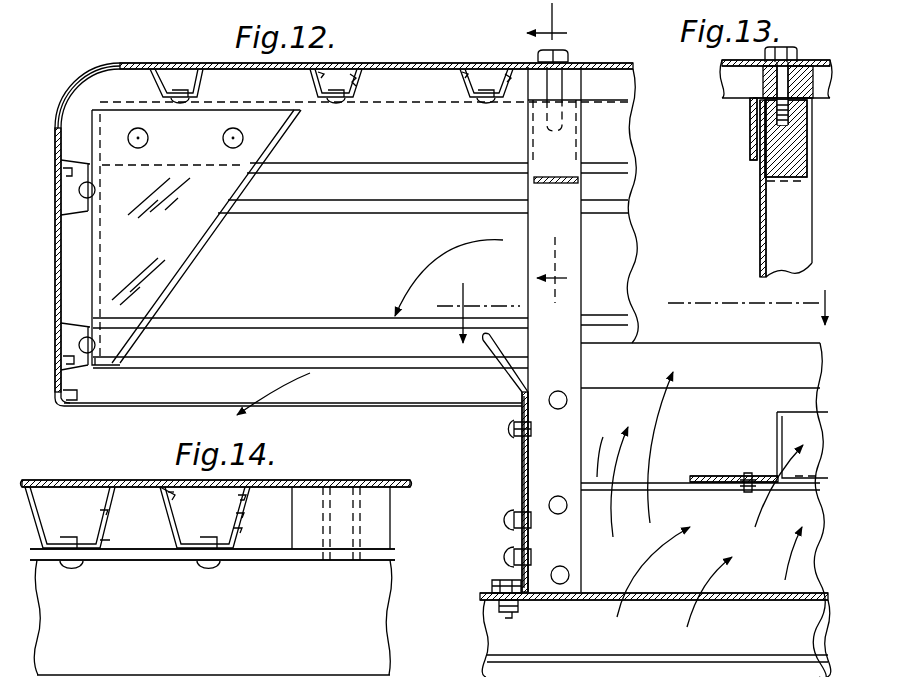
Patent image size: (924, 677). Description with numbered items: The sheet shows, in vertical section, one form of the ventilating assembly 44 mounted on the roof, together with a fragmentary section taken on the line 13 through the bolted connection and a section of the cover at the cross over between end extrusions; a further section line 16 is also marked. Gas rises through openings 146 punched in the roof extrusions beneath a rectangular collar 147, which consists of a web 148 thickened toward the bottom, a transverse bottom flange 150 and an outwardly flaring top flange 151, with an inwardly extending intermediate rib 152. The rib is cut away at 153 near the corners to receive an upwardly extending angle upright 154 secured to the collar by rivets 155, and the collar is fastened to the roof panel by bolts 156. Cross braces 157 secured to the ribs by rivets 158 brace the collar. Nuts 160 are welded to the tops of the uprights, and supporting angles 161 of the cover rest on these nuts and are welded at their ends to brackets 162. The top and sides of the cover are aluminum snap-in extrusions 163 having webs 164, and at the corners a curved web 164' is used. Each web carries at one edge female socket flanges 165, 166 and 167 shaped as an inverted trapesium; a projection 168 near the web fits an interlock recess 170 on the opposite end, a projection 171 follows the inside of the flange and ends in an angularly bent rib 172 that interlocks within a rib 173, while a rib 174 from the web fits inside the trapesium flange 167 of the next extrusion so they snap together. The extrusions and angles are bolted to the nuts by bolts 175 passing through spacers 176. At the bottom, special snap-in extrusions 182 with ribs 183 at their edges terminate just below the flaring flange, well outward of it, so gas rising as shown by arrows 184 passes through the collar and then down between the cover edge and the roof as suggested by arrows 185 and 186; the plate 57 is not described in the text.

In FIG. 12, the section line 13— 13 is at (557, 153).
In FIG. 12, the section line 16— 16 is at (478, 311).
In FIG. 13, the section line 16— 16 is at (746, 303).
In FIG. 12, the ventilating assembly 44 is at (93, 72).
In FIG. 12, the floor plate 57 is at (571, 600).
In FIG. 12, the openings 146 is at (631, 597).
In FIG. 12, the rectangular collar 147 is at (527, 478).
In FIG. 12, the web 148 is at (530, 503).
In FIG. 12, the transverse bottom flange 150 is at (497, 585).
In FIG. 12, the outwardly flaring top flange 151 is at (507, 372).
In FIG. 12, the intermediate rib 152 is at (610, 472).
In FIG. 12, the cut away portion 153 is at (527, 487).
In FIG. 12, the angle upright 154 is at (572, 405).
In FIG. 13, the angle upright 154 is at (777, 238).
In FIG. 12, the rivets 155 is at (530, 430).
In FIG. 12, the bolts 156 is at (497, 602).
In FIG. 12, the cross braces 157 is at (776, 441).
In FIG. 12, the rivets 158 is at (748, 490).
In FIG. 12, the nuts 160 is at (567, 172).
In FIG. 13, the nuts 160 is at (777, 163).
In FIG. 12, the supporting angles 161 is at (615, 123).
In FIG. 13, the supporting angles 161 is at (750, 122).
In FIG. 12, the brackets 162 is at (250, 143).
In FIG. 12, the snap-in extrusions 163 is at (443, 63).
In FIG. 12, the web 164 is at (344, 71).
In FIG. 14, the web 164 is at (216, 466).
In FIG. 12, the curved web 164' is at (47, 215).
In FIG. 12, the flange 165 is at (350, 83).
In FIG. 14, the flange 165 is at (106, 532).
In FIG. 12, the flange 166 is at (347, 100).
In FIG. 14, the flange 166 is at (40, 527).
In FIG. 12, the trapesium flange 167 is at (316, 76).
In FIG. 14, the trapesium flange 167 is at (33, 497).
In FIG. 14, the projection 168 is at (167, 483).
In FIG. 12, the interlock recess 170 is at (355, 66).
In FIG. 14, the interlock recess 170 is at (184, 477).
In FIG. 12, the projection 171 is at (346, 72).
In FIG. 14, the projection 171 is at (177, 502).
In FIG. 14, the angularly bent rib 172 is at (186, 516).
In FIG. 14, the rib 173 is at (107, 512).
In FIG. 14, the rib 174 is at (245, 485).
In FIG. 12, the bolts 175 is at (567, 53).
In FIG. 13, the bolts 175 is at (765, 52).
In FIG. 13, the spacers 176 is at (763, 78).
In FIG. 12, the snap-in extrusions 182 is at (60, 398).
In FIG. 12, the ribs 183 is at (72, 402).
In FIG. 12, the arrows 184 is at (657, 558).
In FIG. 12, the arrows 185 is at (422, 263).
In FIG. 12, the arrows 186 is at (271, 394).